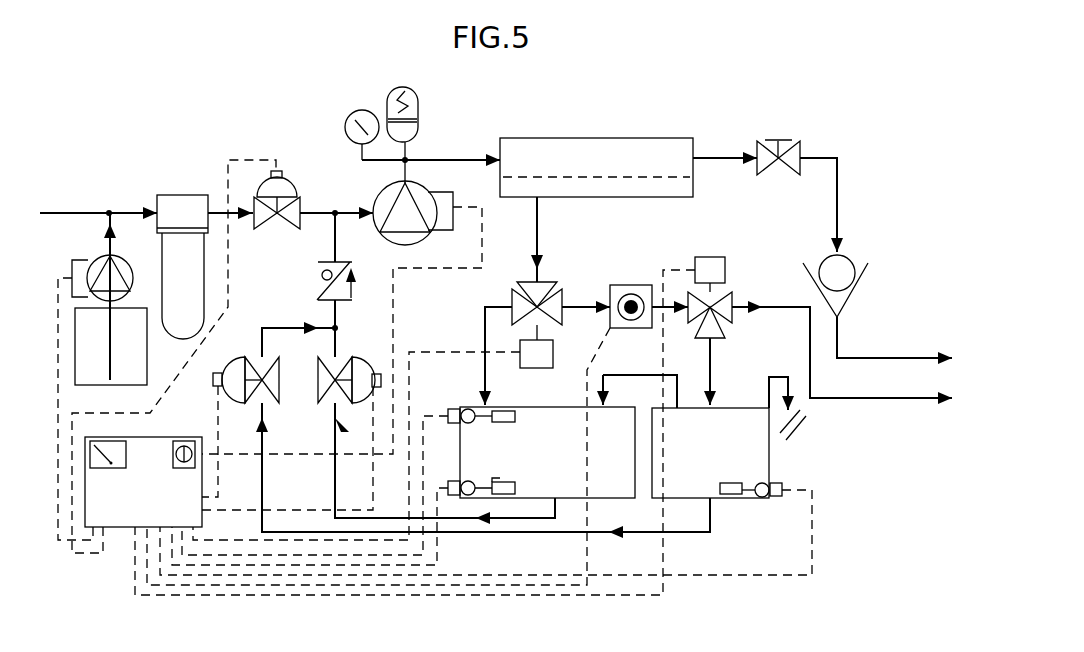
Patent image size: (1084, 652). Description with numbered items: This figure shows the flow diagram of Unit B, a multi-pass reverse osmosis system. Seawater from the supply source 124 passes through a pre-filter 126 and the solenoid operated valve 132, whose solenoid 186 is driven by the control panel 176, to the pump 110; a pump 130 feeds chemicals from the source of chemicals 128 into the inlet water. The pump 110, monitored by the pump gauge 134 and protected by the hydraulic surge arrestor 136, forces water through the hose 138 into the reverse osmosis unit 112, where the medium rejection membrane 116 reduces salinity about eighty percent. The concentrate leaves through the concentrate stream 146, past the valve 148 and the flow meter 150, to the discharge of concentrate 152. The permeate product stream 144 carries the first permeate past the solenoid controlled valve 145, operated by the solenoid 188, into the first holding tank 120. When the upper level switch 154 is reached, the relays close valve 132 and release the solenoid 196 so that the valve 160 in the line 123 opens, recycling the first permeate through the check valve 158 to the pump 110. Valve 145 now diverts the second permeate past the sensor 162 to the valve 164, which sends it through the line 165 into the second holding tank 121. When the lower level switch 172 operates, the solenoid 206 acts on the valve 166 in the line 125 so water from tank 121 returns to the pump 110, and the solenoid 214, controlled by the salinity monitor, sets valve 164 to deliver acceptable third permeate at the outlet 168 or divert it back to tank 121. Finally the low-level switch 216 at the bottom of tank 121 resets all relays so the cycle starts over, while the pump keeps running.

The pump 110 is at (380, 200).
The reverse osmosis unit 112 is at (602, 141).
The membrane 116 is at (625, 175).
The first holding tank 120 is at (424, 470).
The second holding tank 121 is at (514, 476).
The line from tank 120 123 is at (520, 518).
The supply source 124 is at (108, 213).
The line from tank 121 125 is at (720, 532).
The pre-filter 126 is at (185, 195).
The source of chemicals 128 is at (140, 373).
The pump 130 is at (92, 262).
The solenoid operated valve 132 is at (283, 232).
The pump gauge 134 is at (352, 112).
The hydraulic surge arrestor 136 is at (418, 100).
The hose 138 is at (430, 160).
The permeate product stream 144 is at (540, 225).
The solenoid controlled valve 145 is at (401, 409).
The concentrate stream 146 is at (710, 158).
The valve 148 is at (795, 152).
The flow meter 150 is at (855, 288).
The discharge of concentrate 152 is at (858, 358).
The upper level switch 154 is at (515, 418).
The check valve 158 is at (340, 300).
The valve 160 is at (247, 409).
The sensor 162 is at (618, 285).
The valve 164 is at (720, 325).
The line 165 is at (712, 360).
The valve 166 is at (265, 420).
The outlet 168 is at (872, 398).
The lower level switch 172 is at (500, 480).
The control panel 176 is at (118, 540).
The solenoid 186 is at (311, 202).
The solenoid 188 is at (535, 365).
The solenoid 196 is at (382, 380).
The solenoid 206 is at (212, 388).
The solenoid 214 is at (715, 257).
The low-level switch 216 is at (780, 483).